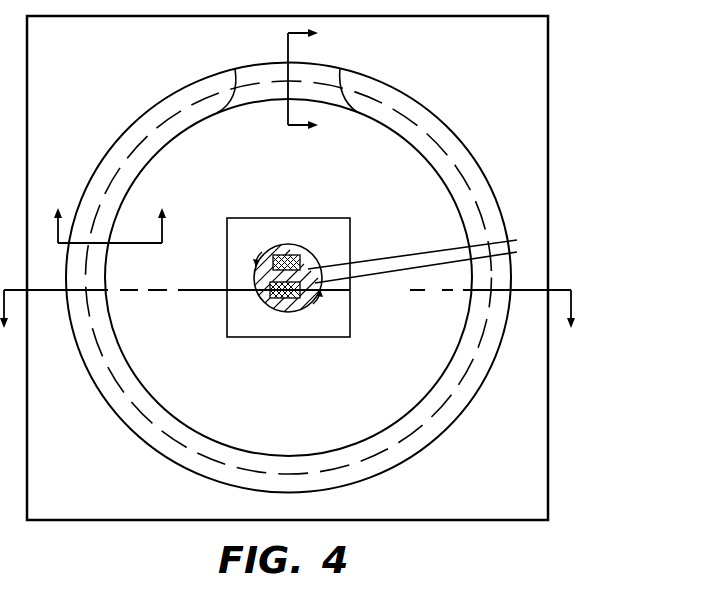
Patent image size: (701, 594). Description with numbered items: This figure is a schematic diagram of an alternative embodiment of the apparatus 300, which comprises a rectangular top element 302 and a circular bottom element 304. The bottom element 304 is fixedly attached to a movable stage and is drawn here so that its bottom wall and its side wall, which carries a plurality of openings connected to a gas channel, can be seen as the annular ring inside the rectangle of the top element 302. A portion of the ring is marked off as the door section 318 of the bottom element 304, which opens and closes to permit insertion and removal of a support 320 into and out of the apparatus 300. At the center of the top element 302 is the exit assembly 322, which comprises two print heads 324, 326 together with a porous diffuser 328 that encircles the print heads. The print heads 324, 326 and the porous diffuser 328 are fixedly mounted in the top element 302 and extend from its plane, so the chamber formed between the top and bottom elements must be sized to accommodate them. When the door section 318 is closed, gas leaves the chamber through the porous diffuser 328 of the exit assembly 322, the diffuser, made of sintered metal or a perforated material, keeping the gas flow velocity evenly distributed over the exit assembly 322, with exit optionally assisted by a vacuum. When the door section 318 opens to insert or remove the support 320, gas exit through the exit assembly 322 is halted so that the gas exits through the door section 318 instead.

The apparatus 300 is at (334, 268).
The top element 302 is at (548, 52).
The bottom element 304 is at (438, 115).
The door section 318 is at (323, 63).
The support 320 is at (266, 218).
The exit assembly 322 is at (319, 236).
The print head 324 is at (320, 262).
The print head 326 is at (290, 310).
The porous diffuser 328 is at (257, 278).